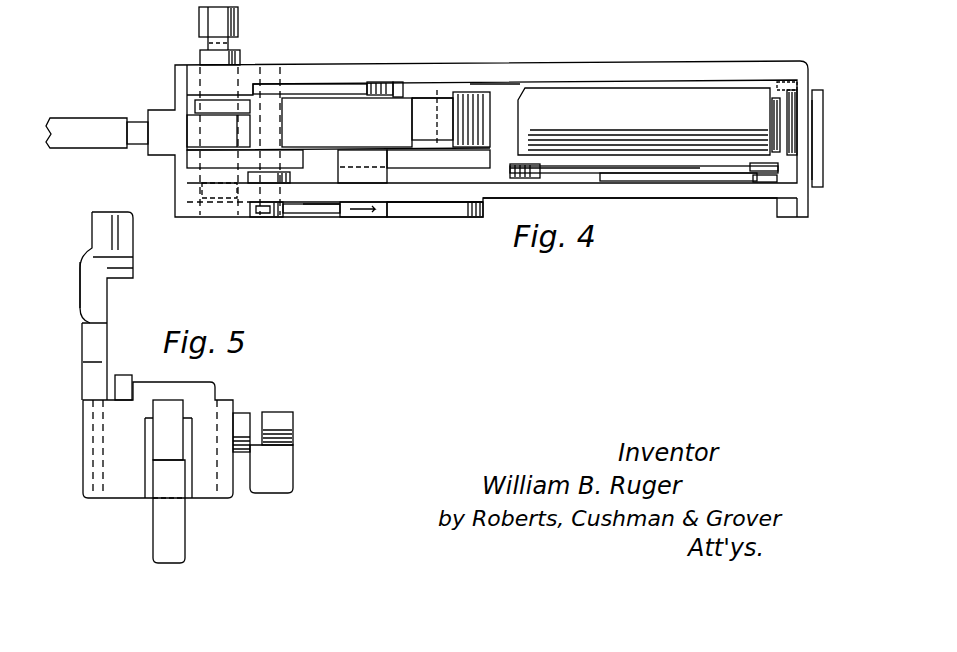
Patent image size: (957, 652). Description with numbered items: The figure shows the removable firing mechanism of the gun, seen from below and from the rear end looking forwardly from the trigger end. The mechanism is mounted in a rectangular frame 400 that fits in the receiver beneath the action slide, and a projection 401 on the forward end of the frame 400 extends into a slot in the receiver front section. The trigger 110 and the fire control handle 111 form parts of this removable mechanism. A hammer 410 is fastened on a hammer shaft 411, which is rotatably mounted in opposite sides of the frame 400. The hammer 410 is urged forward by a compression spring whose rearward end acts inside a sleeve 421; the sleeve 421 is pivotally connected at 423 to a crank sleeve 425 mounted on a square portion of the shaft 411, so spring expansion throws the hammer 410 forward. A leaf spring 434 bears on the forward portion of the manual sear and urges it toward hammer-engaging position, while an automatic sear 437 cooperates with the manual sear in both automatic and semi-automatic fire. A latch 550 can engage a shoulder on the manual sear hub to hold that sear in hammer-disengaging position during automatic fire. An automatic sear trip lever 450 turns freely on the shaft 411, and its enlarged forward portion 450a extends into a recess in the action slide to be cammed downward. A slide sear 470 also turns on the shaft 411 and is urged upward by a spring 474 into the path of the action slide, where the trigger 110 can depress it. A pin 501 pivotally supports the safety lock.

In FIG. 4, the trigger 110 is at (85, 127).
In FIG. 5, the trigger 110 is at (210, 538).
In FIG. 4, the fire control handle 111 is at (199, 23).
In FIG. 5, the fire control handle 111 is at (278, 468).
In FIG. 4, the frame 400 is at (617, 68).
In FIG. 5, the frame 400 is at (232, 402).
In FIG. 4, the projection 401 is at (817, 190).
In FIG. 4, the hammer 410 is at (410, 213).
In FIG. 5, the hammer 410 is at (133, 270).
In FIG. 4, the hammer shaft 411 is at (438, 90).
In FIG. 4, the sleeve 421 is at (550, 98).
In FIG. 4, the pivotal connection 423 is at (483, 74).
In FIG. 4, the crank sleeve 425 is at (416, 75).
In FIG. 4, the leaf spring 434 is at (318, 218).
In FIG. 5, the automatic sear 437 is at (82, 343).
In FIG. 4, the automatic sear trip lever 450 is at (552, 178).
In FIG. 5, the enlarged forward portion of sear trip lever 450a is at (121, 375).
In FIG. 5, the slide sear 470 is at (157, 392).
In FIG. 4, the spring 474 is at (305, 88).
In FIG. 4, the pin 501 is at (267, 218).
In FIG. 4, the latch 550 is at (249, 181).